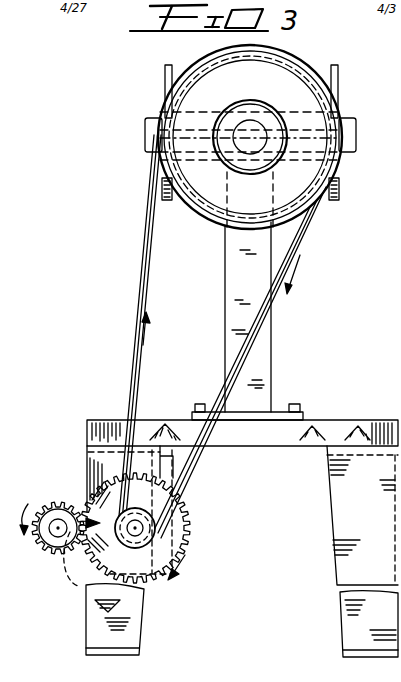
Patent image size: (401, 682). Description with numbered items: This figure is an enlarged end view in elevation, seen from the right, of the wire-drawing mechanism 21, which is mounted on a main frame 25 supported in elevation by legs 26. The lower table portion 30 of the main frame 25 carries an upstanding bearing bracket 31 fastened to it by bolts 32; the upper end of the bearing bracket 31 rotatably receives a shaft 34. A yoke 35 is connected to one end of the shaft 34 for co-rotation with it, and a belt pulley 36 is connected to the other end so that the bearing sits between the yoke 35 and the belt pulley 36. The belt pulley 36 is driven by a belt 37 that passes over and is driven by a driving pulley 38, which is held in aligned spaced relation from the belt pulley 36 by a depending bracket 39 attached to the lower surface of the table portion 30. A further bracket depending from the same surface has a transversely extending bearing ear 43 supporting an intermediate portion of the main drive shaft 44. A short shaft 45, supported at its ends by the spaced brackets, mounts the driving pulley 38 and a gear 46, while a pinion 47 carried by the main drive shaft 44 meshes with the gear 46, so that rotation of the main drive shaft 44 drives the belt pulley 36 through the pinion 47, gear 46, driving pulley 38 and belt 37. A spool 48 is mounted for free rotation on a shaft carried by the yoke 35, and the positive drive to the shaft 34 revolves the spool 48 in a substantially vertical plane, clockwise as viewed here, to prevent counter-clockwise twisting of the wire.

The mechanism 21 is at (338, 100).
The main frame 25 is at (106, 418).
The legs 26 is at (143, 616).
The table portion 30 is at (388, 402).
The bearing bracket 31 is at (272, 333).
The bolts 32 is at (199, 403).
The shaft 34 is at (250, 146).
The yoke 35 is at (357, 133).
The belt pulley 36 is at (292, 190).
The belt 37 is at (151, 278).
The driving pulley 38 is at (152, 542).
The depending bracket 39 is at (190, 514).
The bearing ear 43 is at (66, 562).
The main drive shaft 44 is at (44, 548).
The short shaft 45 is at (185, 555).
The gear 46 is at (214, 480).
The pinion 47 is at (62, 503).
The spool 48 is at (165, 75).